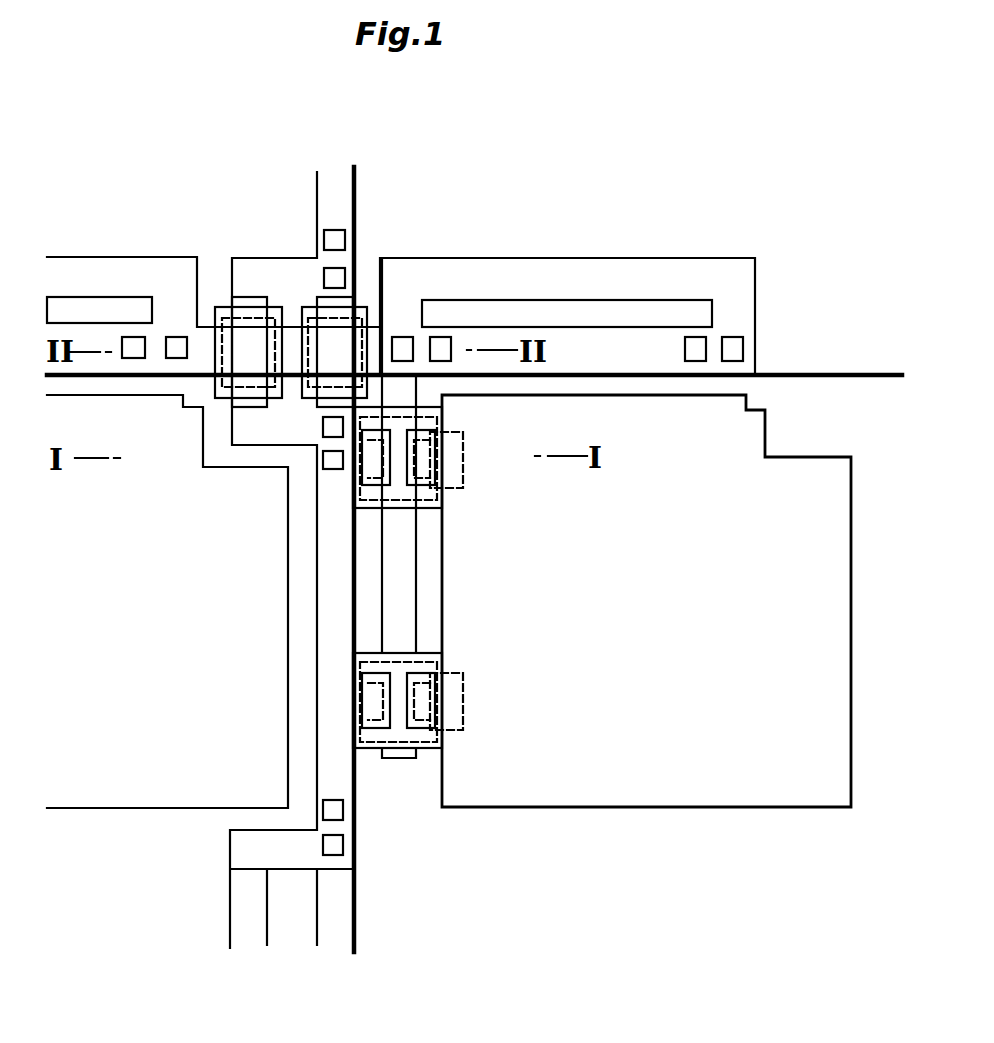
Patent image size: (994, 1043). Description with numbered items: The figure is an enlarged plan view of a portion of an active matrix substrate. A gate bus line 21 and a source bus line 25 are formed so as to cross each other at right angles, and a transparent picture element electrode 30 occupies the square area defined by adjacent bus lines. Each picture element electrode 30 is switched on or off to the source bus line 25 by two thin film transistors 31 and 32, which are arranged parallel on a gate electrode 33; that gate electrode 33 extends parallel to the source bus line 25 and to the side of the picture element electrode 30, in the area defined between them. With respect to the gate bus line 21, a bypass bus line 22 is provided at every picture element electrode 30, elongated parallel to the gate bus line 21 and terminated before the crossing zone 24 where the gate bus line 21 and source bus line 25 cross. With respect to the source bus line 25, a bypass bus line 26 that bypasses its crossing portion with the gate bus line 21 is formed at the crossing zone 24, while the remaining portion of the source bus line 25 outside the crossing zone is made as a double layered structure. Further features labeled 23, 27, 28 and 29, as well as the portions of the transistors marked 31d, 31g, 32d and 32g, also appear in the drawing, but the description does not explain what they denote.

The gate bus line 21 is at (836, 378).
The bypass bus line 22 is at (552, 272).
The contact holes 23 is at (174, 337).
The crossing zone 24 is at (366, 257).
The source bus line 25 is at (315, 183).
The bypass bus line 26 is at (253, 430).
The semiconductor layers 27 is at (297, 402).
The thin film transistors 28 is at (305, 317).
The contact holes 29 is at (320, 462).
The transparent picture element electrode 30 is at (851, 745).
The thin film transistor 31 is at (395, 487).
The drain electrode of first transistor 31d is at (433, 458).
The gate electrode of first transistor 31g is at (362, 468).
The thin film transistor 32 is at (397, 725).
The drain electrode of second transistor 32d is at (433, 698).
The gate electrode of second transistor 32g is at (357, 700).
The gate electrode 33 is at (416, 587).